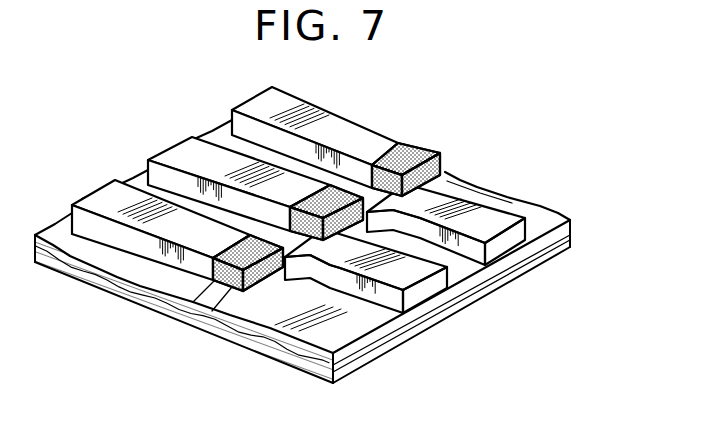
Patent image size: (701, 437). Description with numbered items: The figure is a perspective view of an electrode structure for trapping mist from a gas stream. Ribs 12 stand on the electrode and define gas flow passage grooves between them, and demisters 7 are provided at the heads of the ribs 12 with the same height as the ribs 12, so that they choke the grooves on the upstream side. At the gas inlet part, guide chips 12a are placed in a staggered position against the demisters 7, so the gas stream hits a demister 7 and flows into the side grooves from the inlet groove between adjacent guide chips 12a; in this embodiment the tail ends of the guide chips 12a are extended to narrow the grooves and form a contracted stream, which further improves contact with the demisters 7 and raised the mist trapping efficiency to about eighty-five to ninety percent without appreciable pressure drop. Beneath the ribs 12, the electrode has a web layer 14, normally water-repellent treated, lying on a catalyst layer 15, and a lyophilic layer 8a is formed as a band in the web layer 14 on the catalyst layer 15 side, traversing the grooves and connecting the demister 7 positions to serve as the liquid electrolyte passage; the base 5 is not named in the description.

The substrate 5 is at (302, 265).
The demister 7 is at (341, 192).
The lyophilic layer 8a is at (196, 334).
The rib 12 is at (235, 176).
The guide chip 12a is at (419, 222).
The web layer 14 is at (184, 309).
The catalyst layer 15 is at (451, 304).